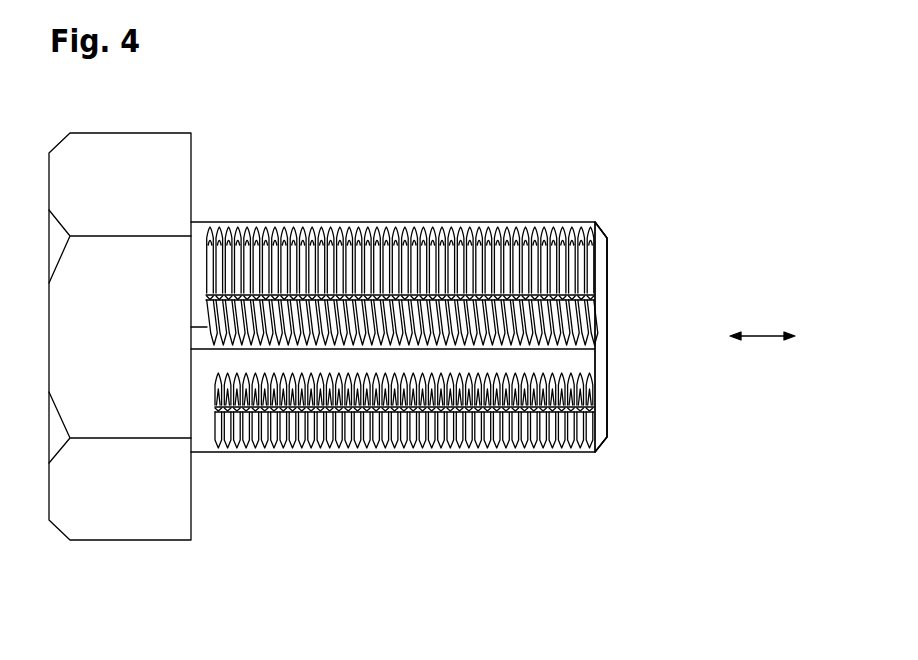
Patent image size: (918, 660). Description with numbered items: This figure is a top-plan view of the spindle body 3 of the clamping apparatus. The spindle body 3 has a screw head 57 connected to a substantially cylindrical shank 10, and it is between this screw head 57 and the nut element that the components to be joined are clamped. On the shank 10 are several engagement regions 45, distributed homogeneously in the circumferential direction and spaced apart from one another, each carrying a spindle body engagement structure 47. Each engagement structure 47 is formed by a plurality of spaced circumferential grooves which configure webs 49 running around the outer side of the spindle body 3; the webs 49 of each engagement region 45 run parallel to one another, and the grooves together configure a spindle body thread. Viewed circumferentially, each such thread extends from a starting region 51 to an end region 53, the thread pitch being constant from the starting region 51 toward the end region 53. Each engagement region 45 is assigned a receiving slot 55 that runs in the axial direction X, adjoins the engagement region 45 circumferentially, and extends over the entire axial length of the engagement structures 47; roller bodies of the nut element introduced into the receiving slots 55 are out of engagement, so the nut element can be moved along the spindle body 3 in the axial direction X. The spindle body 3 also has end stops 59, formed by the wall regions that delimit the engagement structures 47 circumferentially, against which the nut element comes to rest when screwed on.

The spindle body 3 is at (376, 225).
The shank 10 is at (441, 228).
The engagement region 45 is at (574, 273).
The spindle body engagement structure 47 is at (574, 228).
The web 49 is at (531, 424).
The starting region 51 is at (624, 311).
The end region 53 is at (636, 211).
The receiving slot 55 is at (594, 331).
The screw head 57 is at (145, 184).
The end stop 59 is at (519, 228).
The axial direction X is at (762, 338).